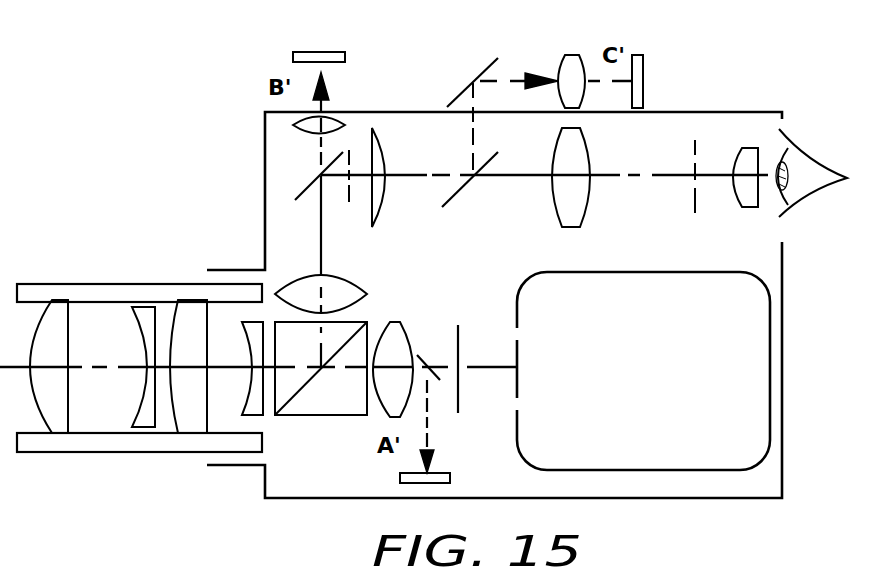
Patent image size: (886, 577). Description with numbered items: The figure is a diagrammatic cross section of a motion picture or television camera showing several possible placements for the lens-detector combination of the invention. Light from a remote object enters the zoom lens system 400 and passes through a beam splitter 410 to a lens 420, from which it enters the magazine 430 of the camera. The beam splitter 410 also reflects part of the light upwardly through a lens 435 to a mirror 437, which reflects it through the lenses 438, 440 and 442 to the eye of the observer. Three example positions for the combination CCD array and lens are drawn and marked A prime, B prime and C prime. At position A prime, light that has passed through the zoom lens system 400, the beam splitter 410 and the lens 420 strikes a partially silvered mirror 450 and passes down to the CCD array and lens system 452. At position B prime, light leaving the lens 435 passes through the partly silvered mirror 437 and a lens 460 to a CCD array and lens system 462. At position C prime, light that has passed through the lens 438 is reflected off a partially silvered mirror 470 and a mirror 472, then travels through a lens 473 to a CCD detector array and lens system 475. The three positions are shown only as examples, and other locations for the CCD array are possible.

The zoom lens system 400 is at (101, 422).
The beam splitter 410 is at (345, 408).
The lens 420 is at (395, 327).
The magazine 430 is at (677, 287).
The lens 435 is at (335, 282).
The mirror 437 is at (303, 190).
The lens 438 is at (377, 150).
The lens 440 is at (578, 143).
The lens 442 is at (733, 165).
The partially silvered mirror 450 is at (422, 353).
The CCD array and lens system 452 is at (478, 458).
The lens 460 is at (337, 125).
The CCD array and lens system 462 is at (303, 52).
The partially silvered mirror 470 is at (453, 197).
The mirror 472 is at (457, 98).
The lens 473 is at (573, 65).
The CCD detector array and lens system 475 is at (642, 70).